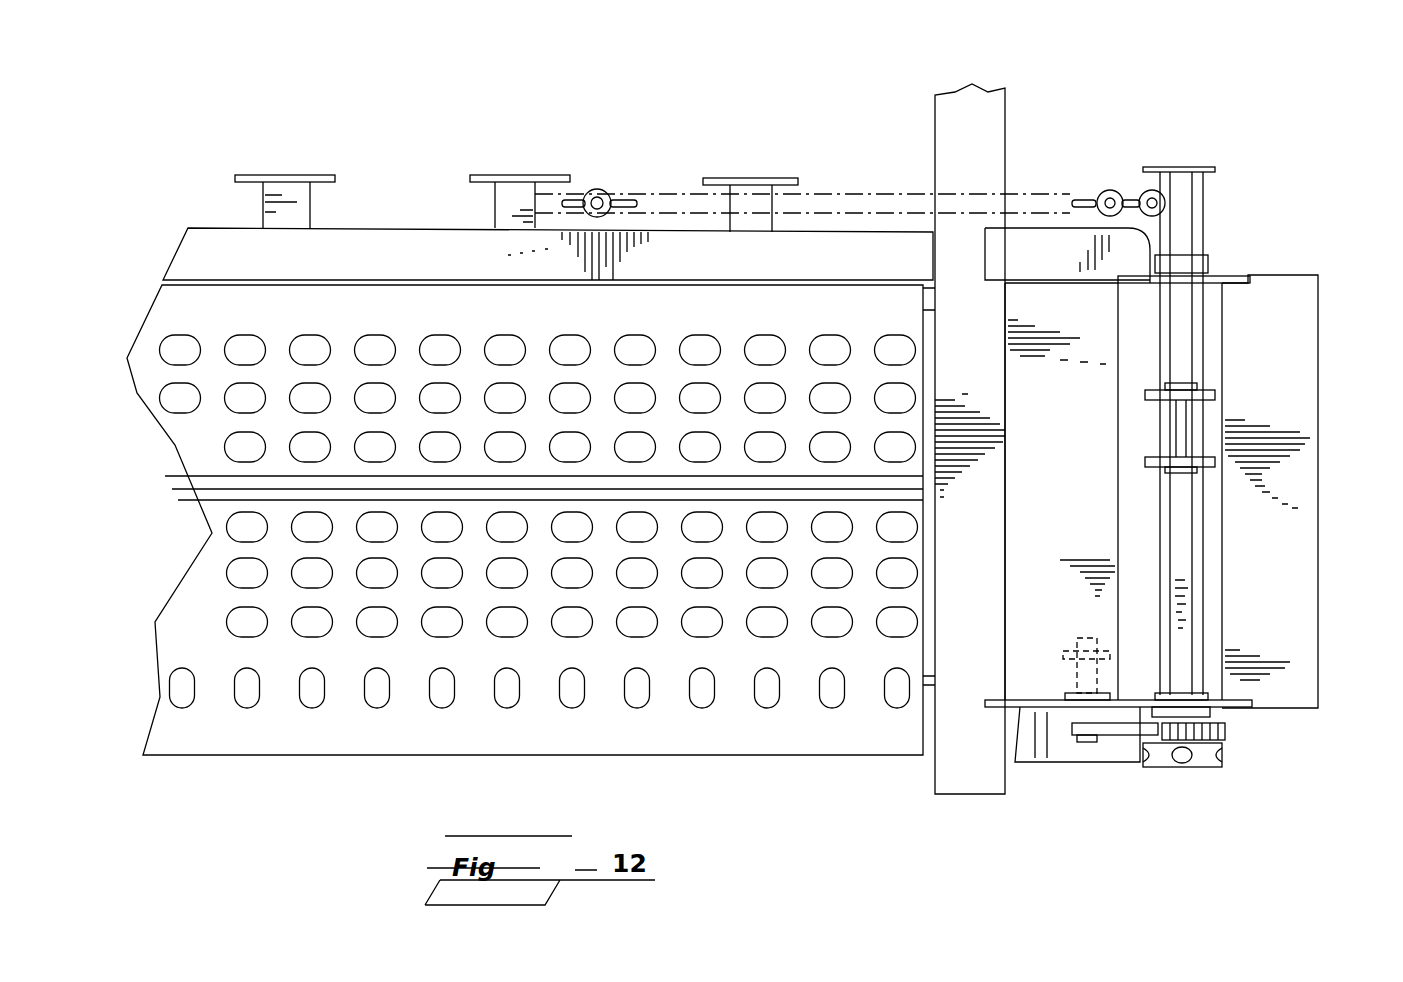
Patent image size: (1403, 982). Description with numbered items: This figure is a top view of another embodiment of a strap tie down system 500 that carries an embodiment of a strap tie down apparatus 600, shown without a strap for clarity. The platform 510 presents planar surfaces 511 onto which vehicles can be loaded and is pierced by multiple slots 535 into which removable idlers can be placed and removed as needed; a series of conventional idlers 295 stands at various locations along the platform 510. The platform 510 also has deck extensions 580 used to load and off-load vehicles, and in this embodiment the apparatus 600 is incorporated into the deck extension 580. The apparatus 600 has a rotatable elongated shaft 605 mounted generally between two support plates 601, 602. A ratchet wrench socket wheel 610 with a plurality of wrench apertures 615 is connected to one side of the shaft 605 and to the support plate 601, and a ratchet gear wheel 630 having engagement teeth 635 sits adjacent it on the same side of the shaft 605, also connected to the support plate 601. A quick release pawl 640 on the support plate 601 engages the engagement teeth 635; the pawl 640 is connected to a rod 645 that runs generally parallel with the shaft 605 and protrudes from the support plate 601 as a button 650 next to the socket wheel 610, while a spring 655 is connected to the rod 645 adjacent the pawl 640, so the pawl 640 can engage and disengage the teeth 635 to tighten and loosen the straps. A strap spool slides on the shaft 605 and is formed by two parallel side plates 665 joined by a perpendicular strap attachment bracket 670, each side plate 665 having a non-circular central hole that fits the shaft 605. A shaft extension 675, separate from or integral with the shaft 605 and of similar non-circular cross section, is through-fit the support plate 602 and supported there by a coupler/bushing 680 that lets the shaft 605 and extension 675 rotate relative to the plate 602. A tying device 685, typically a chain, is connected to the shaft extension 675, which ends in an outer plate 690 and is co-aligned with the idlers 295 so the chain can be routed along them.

The strap tie down system 500 is at (338, 82).
The platform 510 is at (385, 228).
The idlers 295 is at (280, 175).
The planar surfaces 511 is at (472, 330).
The slots 535 is at (631, 350).
The strap tie down apparatus 600 is at (1253, 130).
The support plate 601 is at (1005, 760).
The support plate 602 is at (1215, 283).
The rotatable elongated shaft 605 is at (1183, 535).
The ratchet wrench socket wheel 610 is at (1180, 770).
The wrench apertures 615 is at (1225, 754).
The ratchet gear wheel 630 is at (1232, 712).
The engagement teeth 635 is at (1226, 733).
The quick release pawl 640 is at (1107, 735).
The rod 645 is at (1070, 718).
The button 650 is at (1150, 368).
The spring 655 is at (1078, 690).
The side plates 665 is at (1145, 397).
The strap attachment bracket 670 is at (1185, 412).
The shaft extension 675 is at (1207, 187).
The coupler/bushing 680 is at (1208, 262).
The tying device 685 is at (1108, 197).
The outer plate 690 is at (1172, 167).
The deck extensions 580 is at (1318, 625).